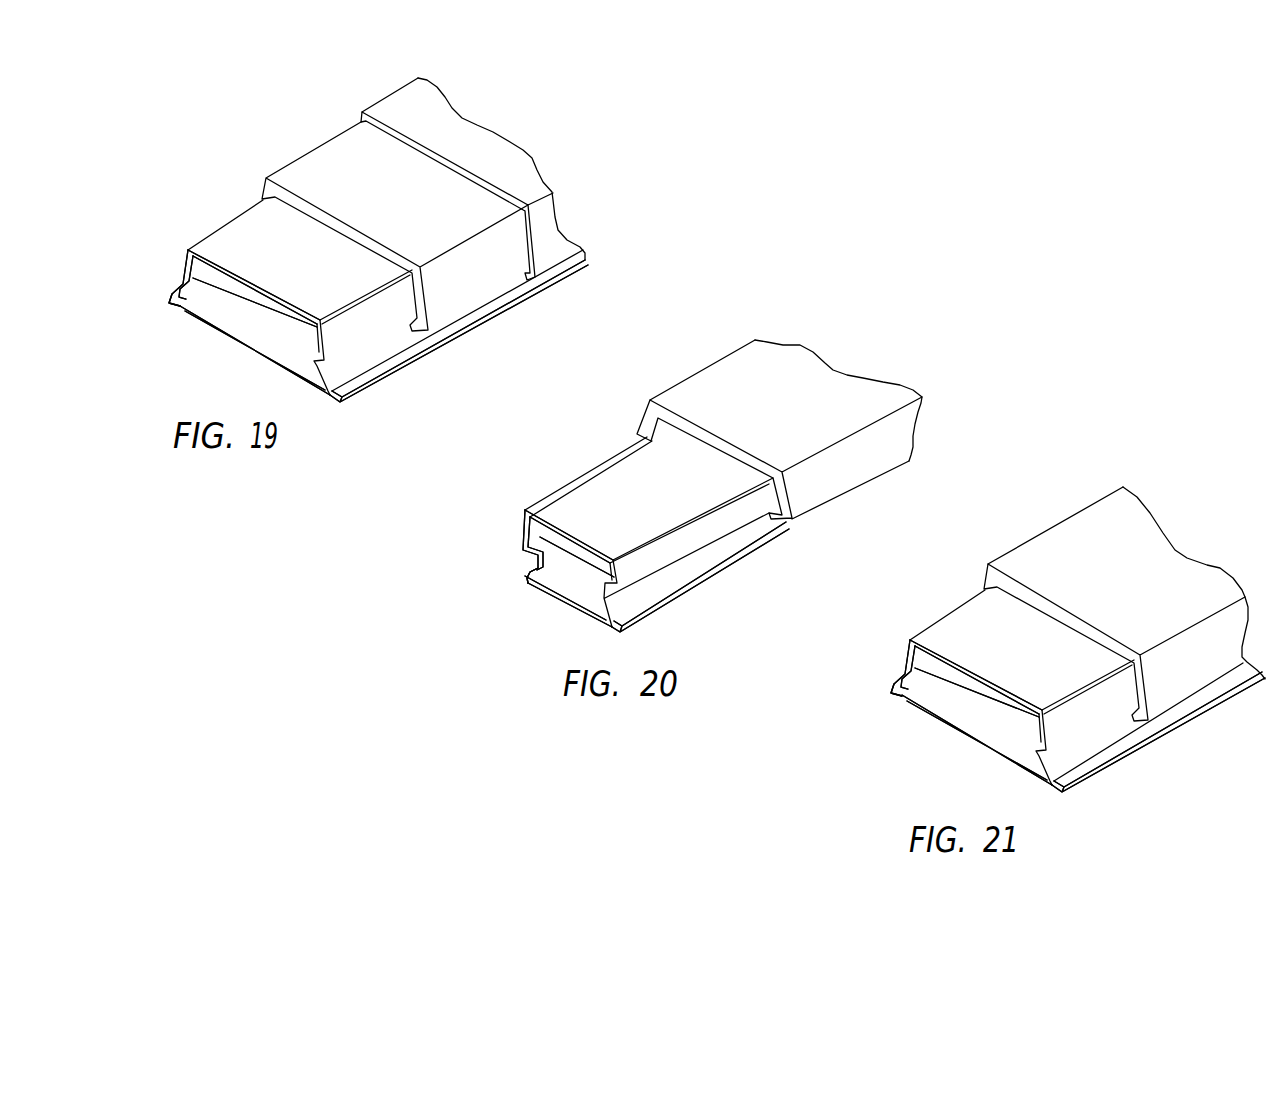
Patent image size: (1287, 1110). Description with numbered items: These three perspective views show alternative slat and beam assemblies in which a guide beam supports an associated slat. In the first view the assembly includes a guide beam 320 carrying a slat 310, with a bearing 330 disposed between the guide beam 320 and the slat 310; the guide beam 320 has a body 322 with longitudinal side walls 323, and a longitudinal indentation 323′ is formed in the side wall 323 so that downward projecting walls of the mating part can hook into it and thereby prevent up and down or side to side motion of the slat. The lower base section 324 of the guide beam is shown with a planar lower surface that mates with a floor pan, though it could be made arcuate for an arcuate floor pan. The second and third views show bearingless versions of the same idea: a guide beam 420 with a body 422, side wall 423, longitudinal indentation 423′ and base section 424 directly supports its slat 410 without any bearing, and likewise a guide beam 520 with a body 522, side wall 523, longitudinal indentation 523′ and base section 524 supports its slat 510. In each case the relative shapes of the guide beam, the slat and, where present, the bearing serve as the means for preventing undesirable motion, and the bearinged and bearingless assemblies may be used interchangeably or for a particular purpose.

In FIG. 19, the first rail member 310 is at (522, 165).
In FIG. 19, the guide beam 320 is at (357, 380).
In FIG. 19, the body 322 is at (262, 322).
In FIG. 19, the side wall 323 is at (185, 271).
In FIG. 19, the longitudinal indentation 323′ is at (178, 292).
In FIG. 19, the flange of second rail member 324 is at (331, 398).
In FIG. 19, the intermediate rail member 330 is at (468, 290).
In FIG. 20, the first rail member 410 is at (823, 375).
In FIG. 20, the guide beam 420 is at (685, 577).
In FIG. 20, the body 422 is at (568, 553).
In FIG. 20, the side wall 423 is at (527, 532).
In FIG. 20, the longitudinal indentation 423′ is at (533, 568).
In FIG. 20, the flange of second rail member 424 is at (602, 627).
In FIG. 21, the first rail member 510 is at (1157, 550).
In FIG. 21, the guide beam 520 is at (1113, 757).
In FIG. 21, the body 522 is at (973, 708).
In FIG. 21, the side wall 523 is at (906, 671).
In FIG. 21, the longitudinal indentation 523′ is at (893, 690).
In FIG. 21, the flange of second rail member 524 is at (1053, 788).